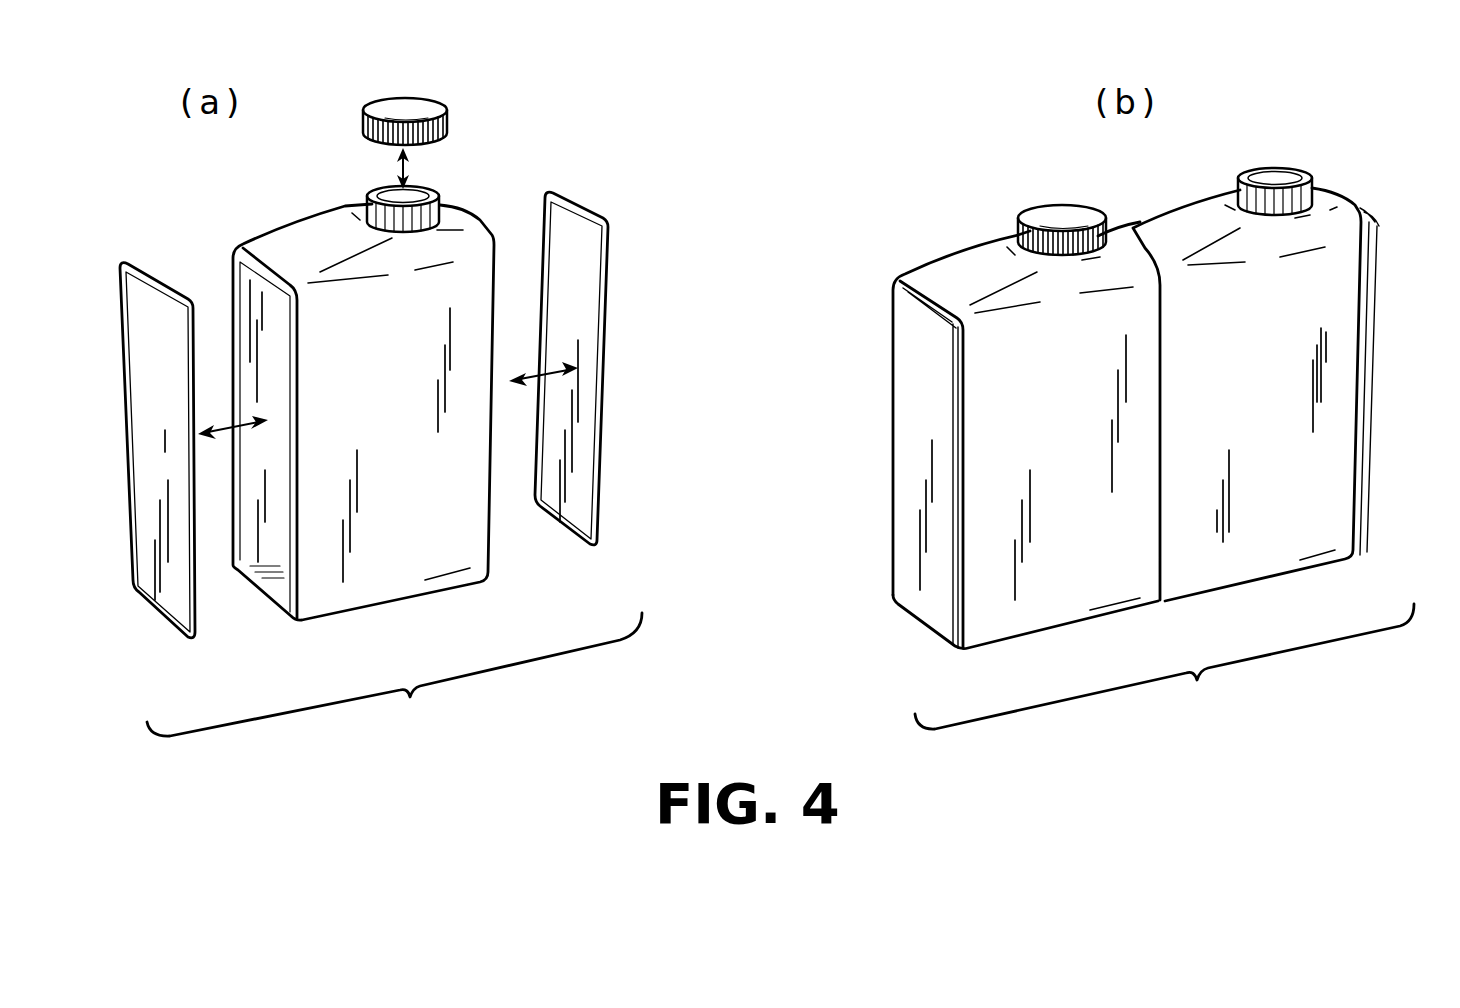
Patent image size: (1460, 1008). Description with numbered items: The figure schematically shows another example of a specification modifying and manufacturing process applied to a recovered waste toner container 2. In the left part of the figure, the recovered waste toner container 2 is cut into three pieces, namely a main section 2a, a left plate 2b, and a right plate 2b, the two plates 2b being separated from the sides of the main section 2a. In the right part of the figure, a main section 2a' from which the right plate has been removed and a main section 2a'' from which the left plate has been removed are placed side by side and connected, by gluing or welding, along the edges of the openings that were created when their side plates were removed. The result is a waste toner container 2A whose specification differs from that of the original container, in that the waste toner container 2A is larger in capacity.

The waste toner container 2 is at (779, 418).
The main section 2a is at (363, 378).
The left plate and right plate 2b is at (168, 578).
The waste toner container 2A is at (1153, 448).
The main section 2a' is at (1025, 448).
The main section 2a'' is at (1247, 398).